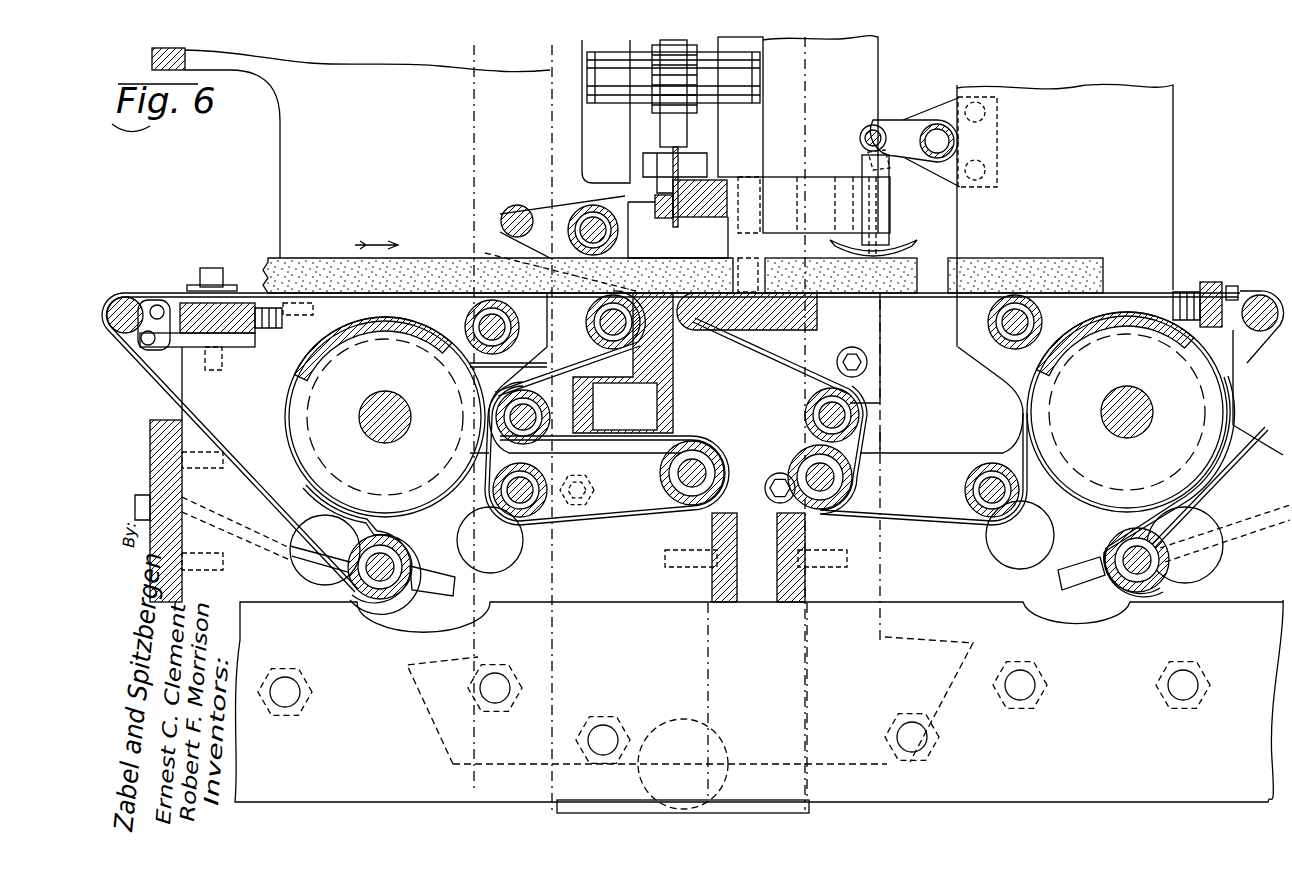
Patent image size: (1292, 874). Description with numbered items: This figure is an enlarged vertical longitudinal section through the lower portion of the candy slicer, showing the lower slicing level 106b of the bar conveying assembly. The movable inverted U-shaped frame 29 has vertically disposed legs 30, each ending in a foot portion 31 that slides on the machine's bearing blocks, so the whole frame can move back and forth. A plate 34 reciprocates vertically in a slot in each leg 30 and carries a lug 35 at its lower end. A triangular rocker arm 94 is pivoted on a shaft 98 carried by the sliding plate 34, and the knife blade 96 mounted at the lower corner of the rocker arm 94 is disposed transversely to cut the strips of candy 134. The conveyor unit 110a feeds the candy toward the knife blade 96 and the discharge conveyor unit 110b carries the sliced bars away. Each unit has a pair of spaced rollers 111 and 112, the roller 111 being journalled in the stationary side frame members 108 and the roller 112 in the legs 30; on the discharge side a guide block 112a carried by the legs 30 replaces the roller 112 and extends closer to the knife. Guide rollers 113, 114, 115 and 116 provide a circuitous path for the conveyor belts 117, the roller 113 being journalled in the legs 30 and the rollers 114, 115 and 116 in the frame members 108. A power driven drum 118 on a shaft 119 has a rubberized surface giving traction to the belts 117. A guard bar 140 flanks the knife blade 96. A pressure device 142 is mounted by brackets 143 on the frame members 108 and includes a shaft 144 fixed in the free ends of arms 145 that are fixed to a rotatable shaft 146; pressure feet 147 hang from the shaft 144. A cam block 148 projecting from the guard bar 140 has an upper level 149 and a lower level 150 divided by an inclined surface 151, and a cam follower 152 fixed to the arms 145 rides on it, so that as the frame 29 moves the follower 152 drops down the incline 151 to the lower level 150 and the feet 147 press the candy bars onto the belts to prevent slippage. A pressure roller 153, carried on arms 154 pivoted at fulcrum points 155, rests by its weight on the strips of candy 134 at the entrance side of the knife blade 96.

The inverted U-shaped frame 29 is at (590, 46).
The leg 30 is at (476, 52).
The foot portion 31 is at (938, 709).
The plate 34 is at (811, 806).
The lug 35 is at (720, 742).
The rocker arm 94 is at (660, 125).
The knife blade 96 is at (679, 150).
The shaft 98 is at (590, 80).
The lower slicing level 106b is at (255, 227).
The side frame member 108 is at (355, 70).
The conveyor unit 110a is at (601, 540).
The discharge conveyor unit 110b is at (934, 540).
The roller 111 is at (135, 307).
The roller 112 is at (596, 337).
The guide block 112a is at (788, 327).
The guide roller 113 is at (545, 418).
The guide roller 114 is at (665, 477).
The guide roller 115 is at (494, 494).
The guide roller 116 is at (398, 588).
The conveyor belt 117 is at (355, 300).
The power driven drum 118 is at (300, 413).
The shaft 119 is at (396, 419).
The strips of candy 134 is at (316, 268).
The guard bar 140 is at (660, 197).
The pressure device 142 is at (868, 106).
The bracket 143 is at (923, 115).
The shaft 144 is at (862, 133).
The arm 145 is at (900, 122).
The rotatable shaft 146 is at (957, 136).
The pressure foot 147 is at (889, 216).
The cam block 148 is at (822, 178).
The upper level 149 is at (800, 172).
The lower level 150 is at (756, 177).
The inclined surface 151 is at (768, 234).
The cam follower 152 is at (888, 160).
The pressure roller 153 is at (577, 213).
The arm 154 is at (502, 215).
The fulcrum point 155 is at (502, 227).